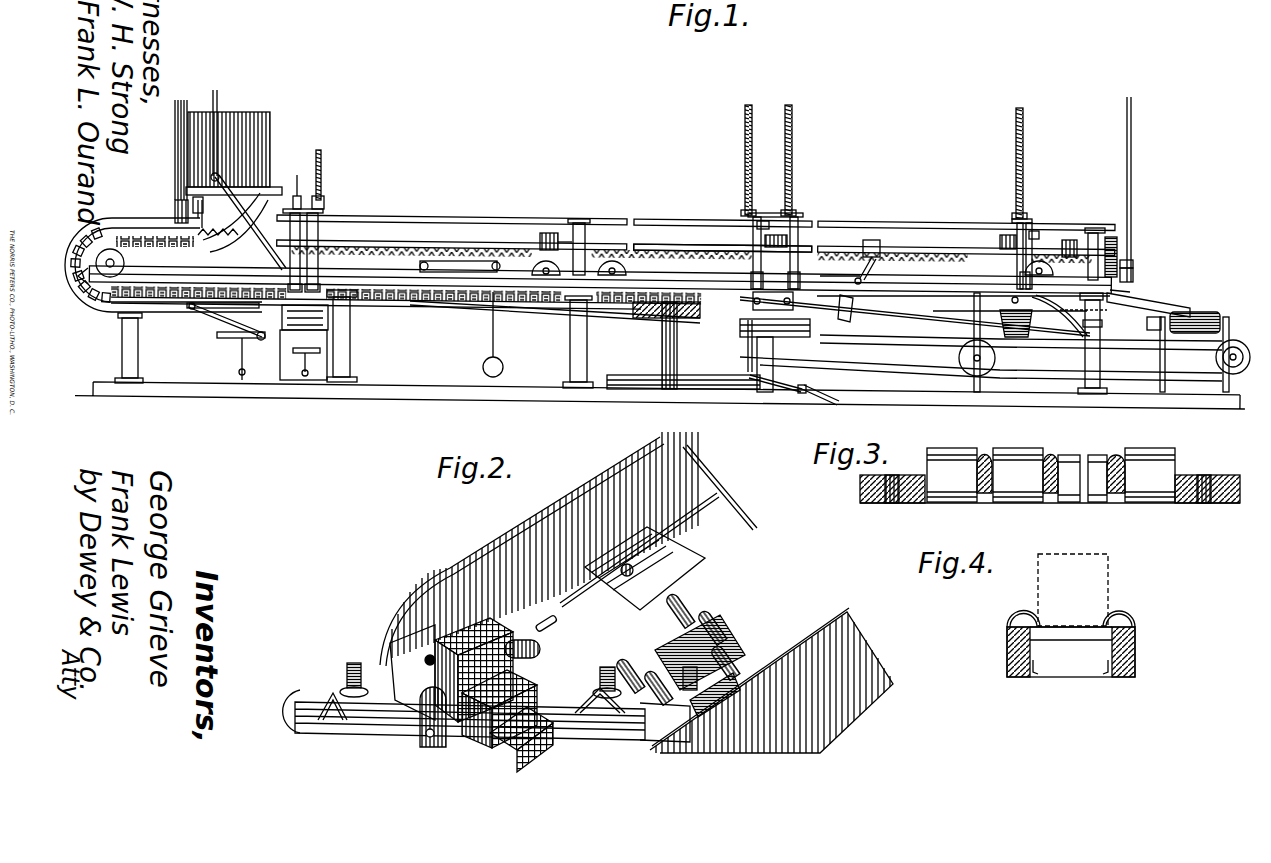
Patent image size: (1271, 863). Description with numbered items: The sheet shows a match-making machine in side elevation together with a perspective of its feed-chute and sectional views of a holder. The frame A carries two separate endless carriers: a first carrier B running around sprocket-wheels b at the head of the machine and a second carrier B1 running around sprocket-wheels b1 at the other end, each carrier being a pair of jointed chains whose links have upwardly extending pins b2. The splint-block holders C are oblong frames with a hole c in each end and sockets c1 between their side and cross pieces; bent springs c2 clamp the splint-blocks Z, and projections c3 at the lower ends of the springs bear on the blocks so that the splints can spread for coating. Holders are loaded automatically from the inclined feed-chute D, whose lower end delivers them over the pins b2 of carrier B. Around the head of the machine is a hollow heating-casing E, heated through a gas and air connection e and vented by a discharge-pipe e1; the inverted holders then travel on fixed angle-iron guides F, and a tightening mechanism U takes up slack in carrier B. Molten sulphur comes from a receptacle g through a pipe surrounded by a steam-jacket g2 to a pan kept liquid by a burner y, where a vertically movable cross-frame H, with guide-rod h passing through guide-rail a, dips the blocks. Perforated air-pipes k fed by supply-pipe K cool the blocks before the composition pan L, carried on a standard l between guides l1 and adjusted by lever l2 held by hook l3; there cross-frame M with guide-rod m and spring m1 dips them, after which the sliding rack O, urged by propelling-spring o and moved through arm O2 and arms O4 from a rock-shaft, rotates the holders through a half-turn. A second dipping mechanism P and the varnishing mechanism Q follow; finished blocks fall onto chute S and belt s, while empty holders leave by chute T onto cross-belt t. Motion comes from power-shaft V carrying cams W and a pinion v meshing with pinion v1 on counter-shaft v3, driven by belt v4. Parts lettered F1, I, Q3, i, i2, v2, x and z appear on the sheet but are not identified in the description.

In FIG. 1, the frame A is at (186, 272).
In FIG. 1, the carrier B is at (452, 241).
In FIG. 2, the carrier B is at (596, 736).
In FIG. 1, the second carrier B1 is at (700, 241).
In FIG. 2, the splint-block holders C is at (398, 680).
In FIG. 1, the inclined feed-chute D is at (235, 222).
In FIG. 2, the inclined feed-chute D is at (565, 540).
In FIG. 1, the hollow heating-casing E is at (100, 305).
In FIG. 1, the fixed angle-iron guides F is at (455, 292).
In FIG. 1, the conveyor chain section F1 is at (963, 301).
In FIG. 1, the vertically-movable cross-frame H is at (287, 270).
In FIG. 1, the standard / post I is at (318, 268).
In FIG. 1, the supply-pipe K is at (727, 375).
In FIG. 1, the composition pan L is at (775, 342).
In FIG. 1, the cross-frame M is at (742, 265).
In FIG. 1, the sliding rack O is at (836, 308).
In FIG. 1, the arm O2 is at (873, 270).
In FIG. 1, the arm O4 is at (855, 305).
In FIG. 1, the second dipping mechanism P is at (798, 241).
In FIG. 1, the varnishing dipping mechanism Q is at (1010, 240).
In FIG. 1, the block Q3 is at (872, 242).
In FIG. 1, the inclined chute S is at (1060, 330).
In FIG. 1, the inclined chute T is at (1158, 304).
In FIG. 1, the tightening mechanism U is at (450, 272).
In FIG. 1, the power-shaft V is at (84, 285).
In FIG. 1, the cams W is at (552, 237).
In FIG. 1, the splint-blocks Z is at (222, 230).
In FIG. 2, the splint-blocks Z is at (540, 660).
In FIG. 4, the splint-blocks Z is at (1108, 563).
In FIG. 1, the guide-rail a is at (302, 330).
In FIG. 2, the guide-rail a is at (546, 622).
In FIG. 1, the sprocket-wheels b is at (126, 262).
In FIG. 1, the sprocket-wheels b1 is at (622, 266).
In FIG. 2, the pin b2 is at (355, 663).
In FIG. 2, the hole c is at (424, 661).
In FIG. 3, the hole c is at (890, 503).
In FIG. 4, the hole c is at (1007, 653).
In FIG. 2, the sockets c1 is at (700, 666).
In FIG. 3, the sockets c1 is at (952, 503).
In FIG. 4, the sockets c1 is at (1071, 643).
In FIG. 2, the bent springs c2 is at (418, 736).
In FIG. 3, the bent springs c2 is at (1050, 473).
In FIG. 4, the bent springs c2 is at (1022, 612).
In FIG. 4, the projections c3 is at (1038, 674).
In FIG. 1, the gas and air connection e is at (225, 338).
In FIG. 1, the discharge-pipe e1 is at (180, 138).
In FIG. 1, the receptacle g is at (270, 128).
In FIG. 1, the steam-jacket g2 is at (240, 200).
In FIG. 1, the vertical guide-rod h is at (295, 190).
In FIG. 1, the bearing i is at (324, 192).
In FIG. 1, the screw i2 is at (322, 165).
In FIG. 1, the perforated air-pipes k is at (655, 320).
In FIG. 1, the standard l is at (748, 352).
In FIG. 1, the guides l1 is at (895, 340).
In FIG. 1, the lever l2 is at (785, 379).
In FIG. 1, the hook l3 is at (815, 387).
In FIG. 1, the guide-rod m is at (906, 231).
In FIG. 1, the spring m1 is at (746, 170).
In FIG. 1, the propelling-spring o is at (1083, 301).
In FIG. 1, the traveling belt s is at (1182, 340).
In FIG. 1, the cross-belt t is at (1200, 315).
In FIG. 1, the pinion v is at (1111, 249).
In FIG. 1, the second pinion v1 is at (1120, 286).
In FIG. 1, the pinion v2 is at (1133, 272).
In FIG. 1, the counter-shaft pulley v3 is at (1133, 262).
In FIG. 1, the driving-belt v4 is at (1131, 200).
In FIG. 1, the top rail x is at (502, 215).
In FIG. 1, the burner y is at (312, 355).
In FIG. 1, the pendulum rod z is at (545, 305).